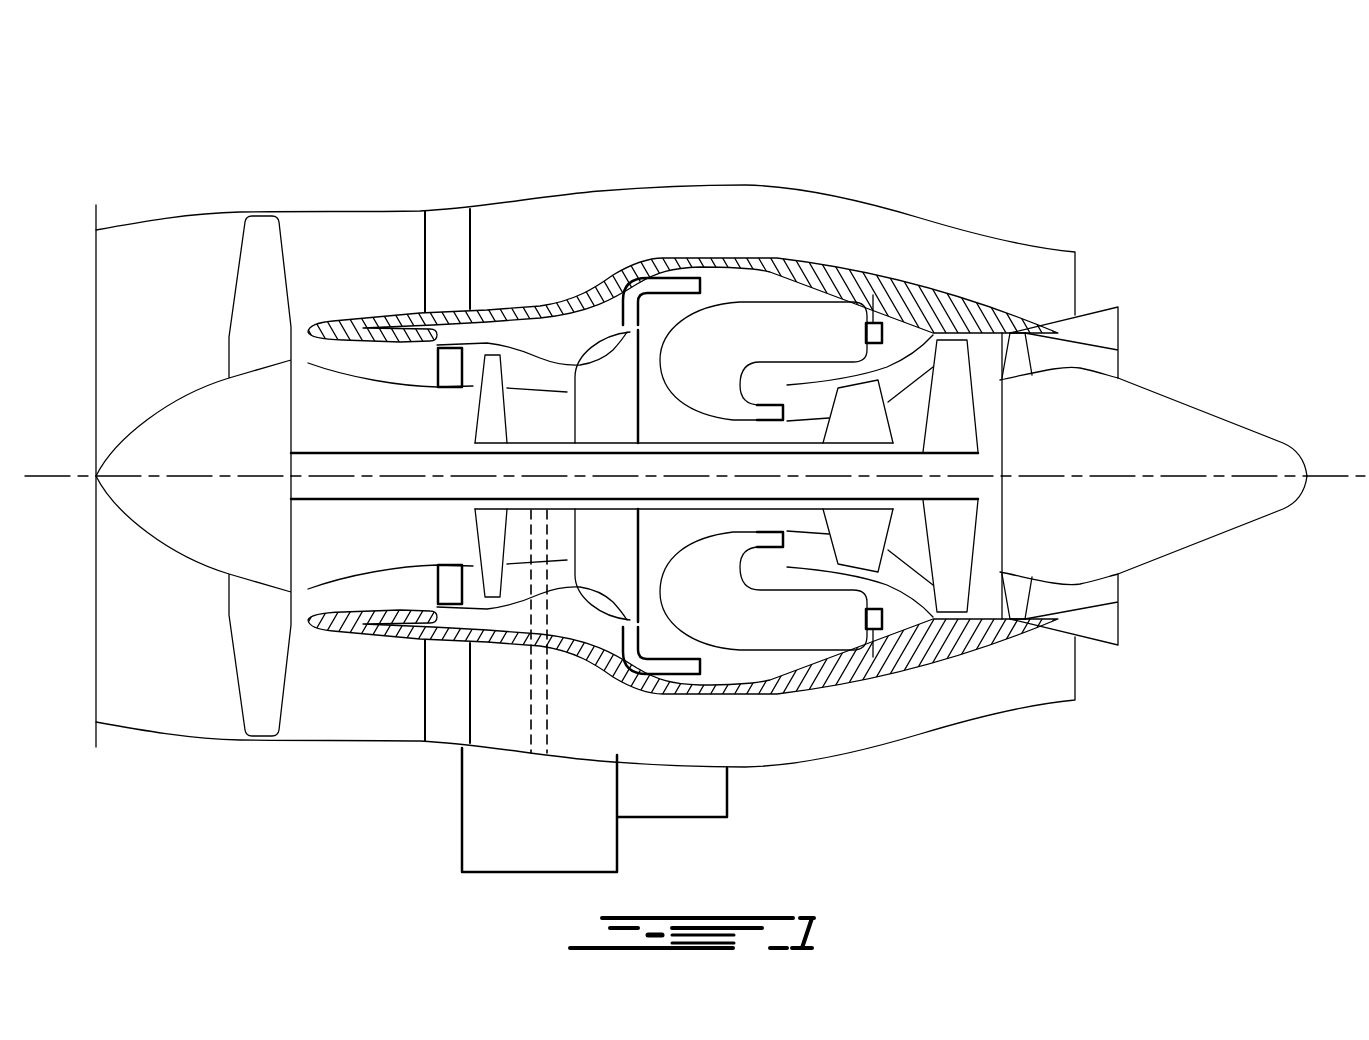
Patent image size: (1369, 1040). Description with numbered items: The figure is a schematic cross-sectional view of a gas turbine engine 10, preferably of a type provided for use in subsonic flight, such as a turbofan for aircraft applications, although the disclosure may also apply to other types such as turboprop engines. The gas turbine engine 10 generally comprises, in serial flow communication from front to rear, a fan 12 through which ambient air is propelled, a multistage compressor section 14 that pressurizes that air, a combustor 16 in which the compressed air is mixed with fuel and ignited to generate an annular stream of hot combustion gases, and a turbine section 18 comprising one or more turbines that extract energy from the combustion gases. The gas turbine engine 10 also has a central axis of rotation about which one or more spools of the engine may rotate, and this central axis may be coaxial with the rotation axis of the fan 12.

The gas turbine engine 10 is at (697, 453).
The fan 12 is at (255, 642).
The multistage compressor section 14 is at (527, 367).
The combustor 16 is at (763, 323).
The turbine section 18 is at (907, 548).